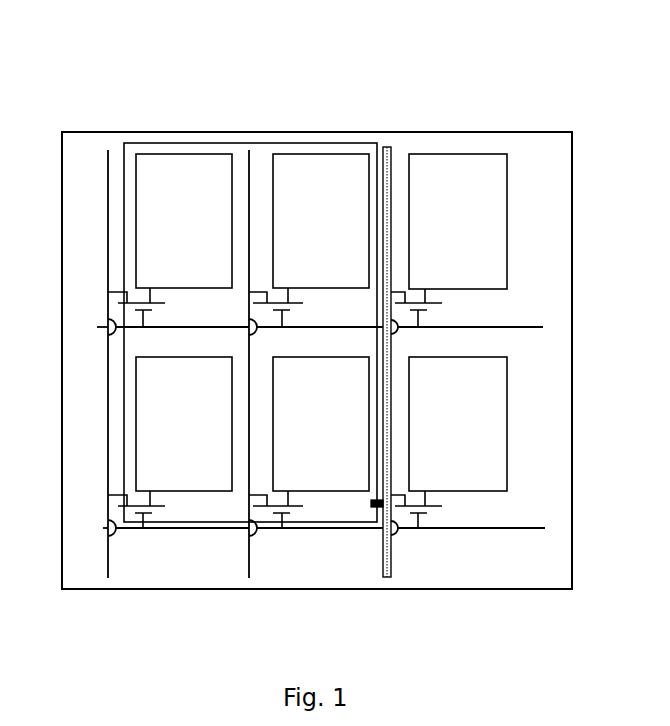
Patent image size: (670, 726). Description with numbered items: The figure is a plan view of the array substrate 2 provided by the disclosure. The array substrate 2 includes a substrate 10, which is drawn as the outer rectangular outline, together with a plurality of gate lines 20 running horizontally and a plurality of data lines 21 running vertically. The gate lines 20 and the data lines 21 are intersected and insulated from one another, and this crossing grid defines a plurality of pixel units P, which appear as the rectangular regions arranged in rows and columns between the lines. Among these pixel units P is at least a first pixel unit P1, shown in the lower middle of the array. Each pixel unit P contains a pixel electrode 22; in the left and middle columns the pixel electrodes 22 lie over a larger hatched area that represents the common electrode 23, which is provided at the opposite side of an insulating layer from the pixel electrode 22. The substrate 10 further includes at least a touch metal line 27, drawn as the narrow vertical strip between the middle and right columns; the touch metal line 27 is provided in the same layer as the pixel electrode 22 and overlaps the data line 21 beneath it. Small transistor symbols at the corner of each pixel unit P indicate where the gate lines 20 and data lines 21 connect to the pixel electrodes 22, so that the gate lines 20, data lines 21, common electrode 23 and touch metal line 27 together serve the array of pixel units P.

The array substrate 2 is at (315, 34).
The substrate 10 is at (98, 438).
The gate line 20 is at (520, 327).
The data line 21 is at (107, 203).
The pixel electrode 22 is at (448, 170).
The common electrode 23 is at (130, 150).
The touch metal line 27 is at (392, 158).
The pixel unit P is at (162, 525).
The first pixel unit P1 is at (323, 527).